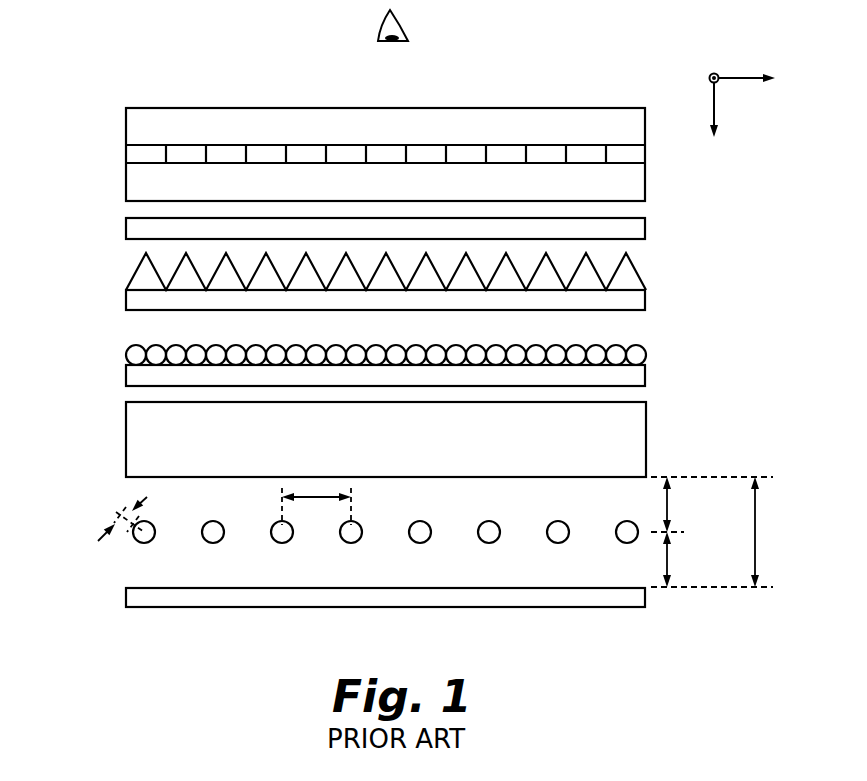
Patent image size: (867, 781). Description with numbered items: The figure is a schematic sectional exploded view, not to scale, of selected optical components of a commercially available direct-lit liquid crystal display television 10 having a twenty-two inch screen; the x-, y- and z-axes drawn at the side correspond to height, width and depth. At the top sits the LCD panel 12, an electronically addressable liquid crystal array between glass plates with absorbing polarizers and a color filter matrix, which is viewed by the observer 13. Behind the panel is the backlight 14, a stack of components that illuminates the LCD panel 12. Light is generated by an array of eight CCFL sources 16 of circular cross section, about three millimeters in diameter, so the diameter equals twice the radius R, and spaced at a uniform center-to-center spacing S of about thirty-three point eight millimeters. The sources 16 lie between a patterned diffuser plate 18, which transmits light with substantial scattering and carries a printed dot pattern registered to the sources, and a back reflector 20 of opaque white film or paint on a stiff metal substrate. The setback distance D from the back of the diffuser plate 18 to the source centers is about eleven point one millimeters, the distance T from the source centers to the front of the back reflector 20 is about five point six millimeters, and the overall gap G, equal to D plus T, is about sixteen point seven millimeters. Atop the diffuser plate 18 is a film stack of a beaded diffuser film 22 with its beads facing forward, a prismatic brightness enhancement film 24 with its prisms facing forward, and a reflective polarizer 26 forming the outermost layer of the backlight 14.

The liquid crystal display television 10 is at (168, 49).
The LCD panel 12 is at (96, 108).
The observer 13 is at (400, 22).
The backlight 14 is at (95, 222).
The CCFL sources 16 is at (558, 545).
The patterned diffuser plate 18 is at (646, 445).
The back reflector 20 is at (603, 607).
The beaded diffuser film 22 is at (646, 375).
The prismatic brightness enhancement film 24 is at (646, 297).
The reflective polarizer 26 is at (645, 231).
The source radius R is at (117, 505).
The center-to-center spacing S is at (313, 497).
The setback distance D is at (670, 505).
The source-to-reflector distance T is at (670, 560).
The overall gap dimension G is at (757, 532).